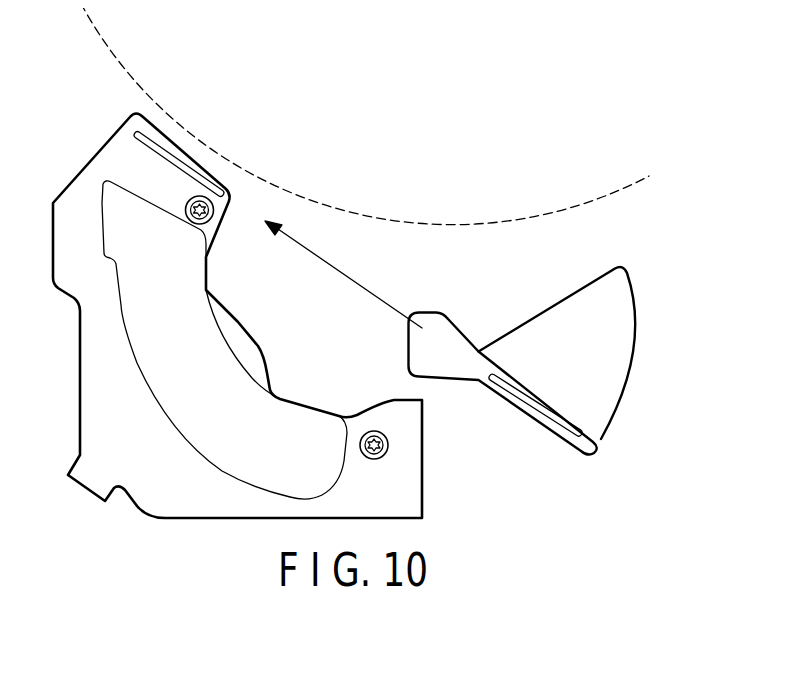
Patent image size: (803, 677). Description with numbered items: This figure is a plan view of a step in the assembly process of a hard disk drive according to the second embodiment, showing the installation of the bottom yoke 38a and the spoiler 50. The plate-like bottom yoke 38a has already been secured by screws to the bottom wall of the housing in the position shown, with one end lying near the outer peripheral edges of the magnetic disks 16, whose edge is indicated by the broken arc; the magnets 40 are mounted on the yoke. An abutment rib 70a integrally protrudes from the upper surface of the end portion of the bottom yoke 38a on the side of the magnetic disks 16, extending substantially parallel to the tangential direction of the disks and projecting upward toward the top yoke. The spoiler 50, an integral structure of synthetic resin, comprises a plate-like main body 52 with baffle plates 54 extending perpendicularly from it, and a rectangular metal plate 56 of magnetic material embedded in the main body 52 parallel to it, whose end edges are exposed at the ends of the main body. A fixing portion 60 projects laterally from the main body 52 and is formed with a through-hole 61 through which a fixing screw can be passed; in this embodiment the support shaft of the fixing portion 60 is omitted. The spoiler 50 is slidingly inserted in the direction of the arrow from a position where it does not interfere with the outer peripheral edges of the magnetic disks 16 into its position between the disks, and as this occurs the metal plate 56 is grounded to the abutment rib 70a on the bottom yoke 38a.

The magnetic disks 16 is at (375, 216).
The bottom yoke 38a is at (95, 405).
The magnets 40 is at (169, 351).
The spoiler 50 is at (527, 383).
The main body 52 is at (617, 447).
The baffle plates 54 is at (552, 315).
The metal plate 56 is at (530, 402).
The fixing portion 60 is at (435, 315).
The through-hole 61 is at (430, 342).
The abutment rib 70a is at (147, 142).